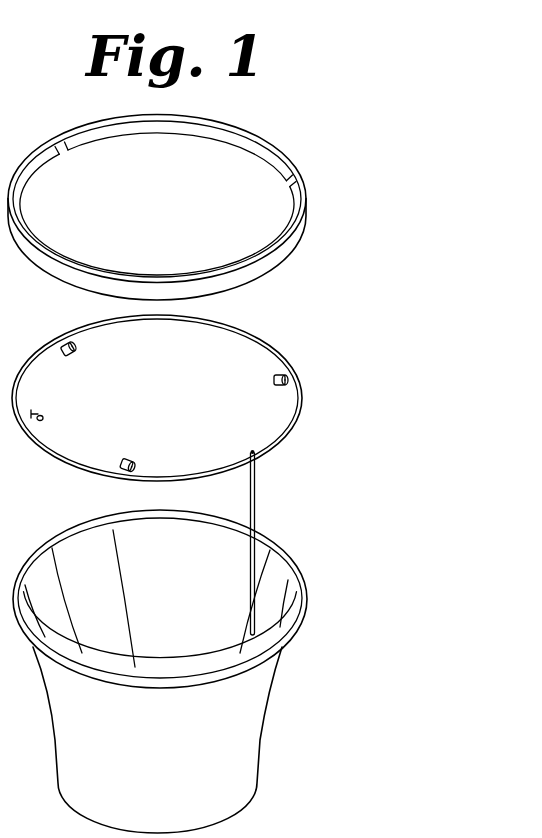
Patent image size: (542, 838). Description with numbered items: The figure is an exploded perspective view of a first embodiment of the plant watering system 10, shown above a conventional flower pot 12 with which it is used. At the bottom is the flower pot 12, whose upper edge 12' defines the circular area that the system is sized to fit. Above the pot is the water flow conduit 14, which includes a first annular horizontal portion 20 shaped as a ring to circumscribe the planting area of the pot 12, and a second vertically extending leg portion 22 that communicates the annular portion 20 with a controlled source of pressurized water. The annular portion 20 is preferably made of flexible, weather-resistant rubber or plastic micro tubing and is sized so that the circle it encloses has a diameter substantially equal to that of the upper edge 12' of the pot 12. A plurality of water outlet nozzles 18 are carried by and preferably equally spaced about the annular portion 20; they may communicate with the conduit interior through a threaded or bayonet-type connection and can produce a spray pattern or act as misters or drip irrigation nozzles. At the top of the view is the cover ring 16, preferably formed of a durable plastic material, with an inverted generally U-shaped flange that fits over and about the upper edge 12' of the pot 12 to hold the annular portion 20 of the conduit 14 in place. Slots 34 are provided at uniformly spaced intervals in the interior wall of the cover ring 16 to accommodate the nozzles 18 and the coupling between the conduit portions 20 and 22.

The plant watering system 10 is at (315, 346).
The flower pot 12 is at (191, 670).
The upper edge 12' is at (191, 597).
The water flow conduit 14 is at (299, 461).
The cover ring 16 is at (187, 477).
The water outlet nozzles 18 is at (73, 357).
The first annular horizontal portion 20 is at (294, 428).
The second vertically extending leg portion 22 is at (257, 497).
The slots 34 is at (61, 153).